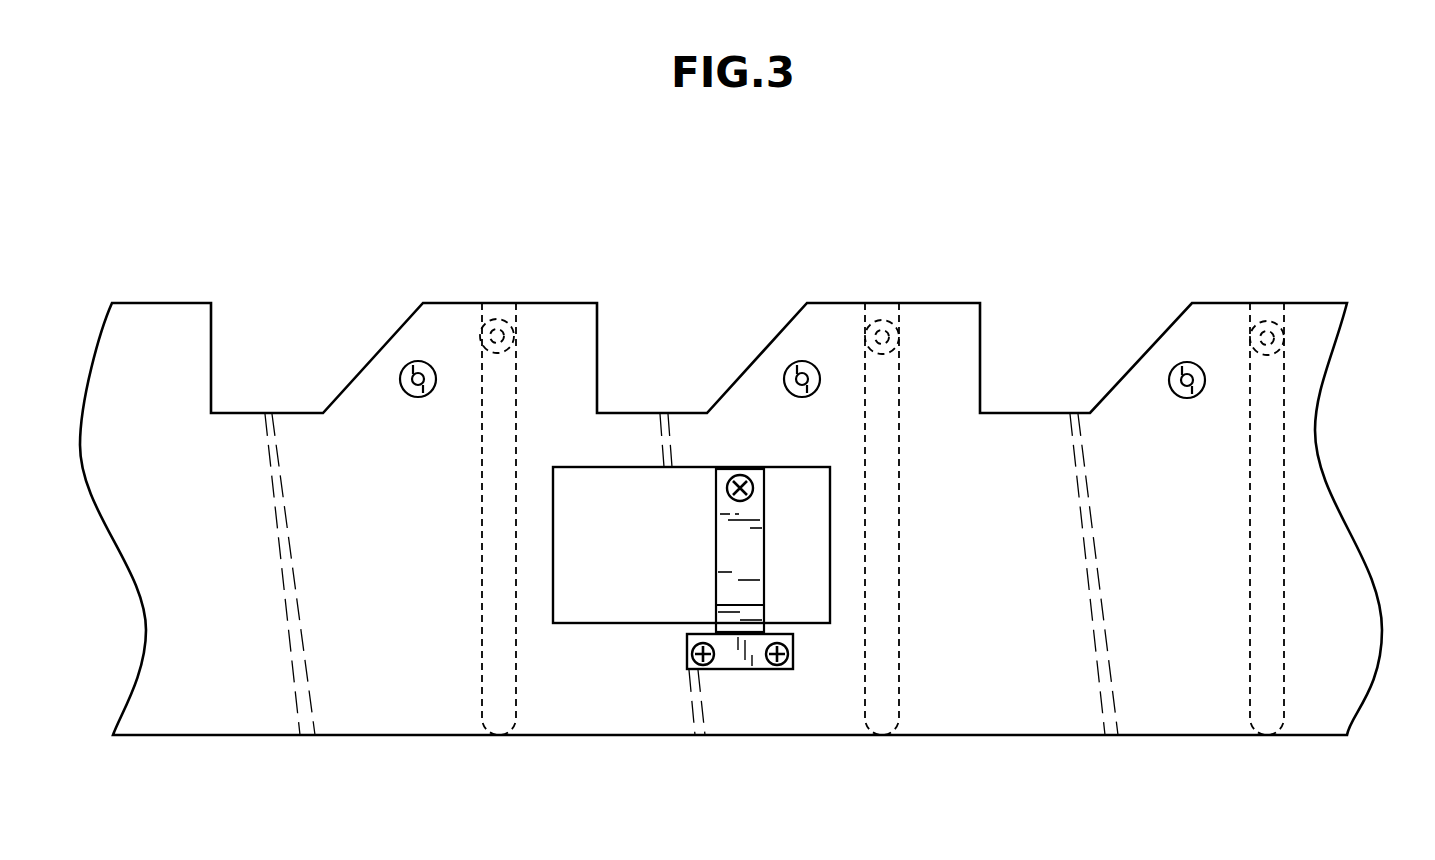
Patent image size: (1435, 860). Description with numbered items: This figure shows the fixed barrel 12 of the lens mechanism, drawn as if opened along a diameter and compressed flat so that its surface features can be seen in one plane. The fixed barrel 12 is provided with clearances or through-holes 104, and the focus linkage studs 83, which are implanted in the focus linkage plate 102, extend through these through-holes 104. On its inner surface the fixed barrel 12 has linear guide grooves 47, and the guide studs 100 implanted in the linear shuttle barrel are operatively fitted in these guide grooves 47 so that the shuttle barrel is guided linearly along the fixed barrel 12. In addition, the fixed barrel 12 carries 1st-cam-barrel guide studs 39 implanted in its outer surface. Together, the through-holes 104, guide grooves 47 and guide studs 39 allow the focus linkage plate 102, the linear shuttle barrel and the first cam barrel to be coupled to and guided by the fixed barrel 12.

The fixed barrel 12 is at (1222, 305).
The 1st-cam-barrel guide stud 39 is at (1167, 378).
The linear guide groove 47 is at (1268, 320).
The guide stud 100 is at (1286, 362).
The through-hole 104 is at (652, 467).
The focus linkage stud 83 is at (740, 468).
The focus linkage plate 102 is at (731, 618).